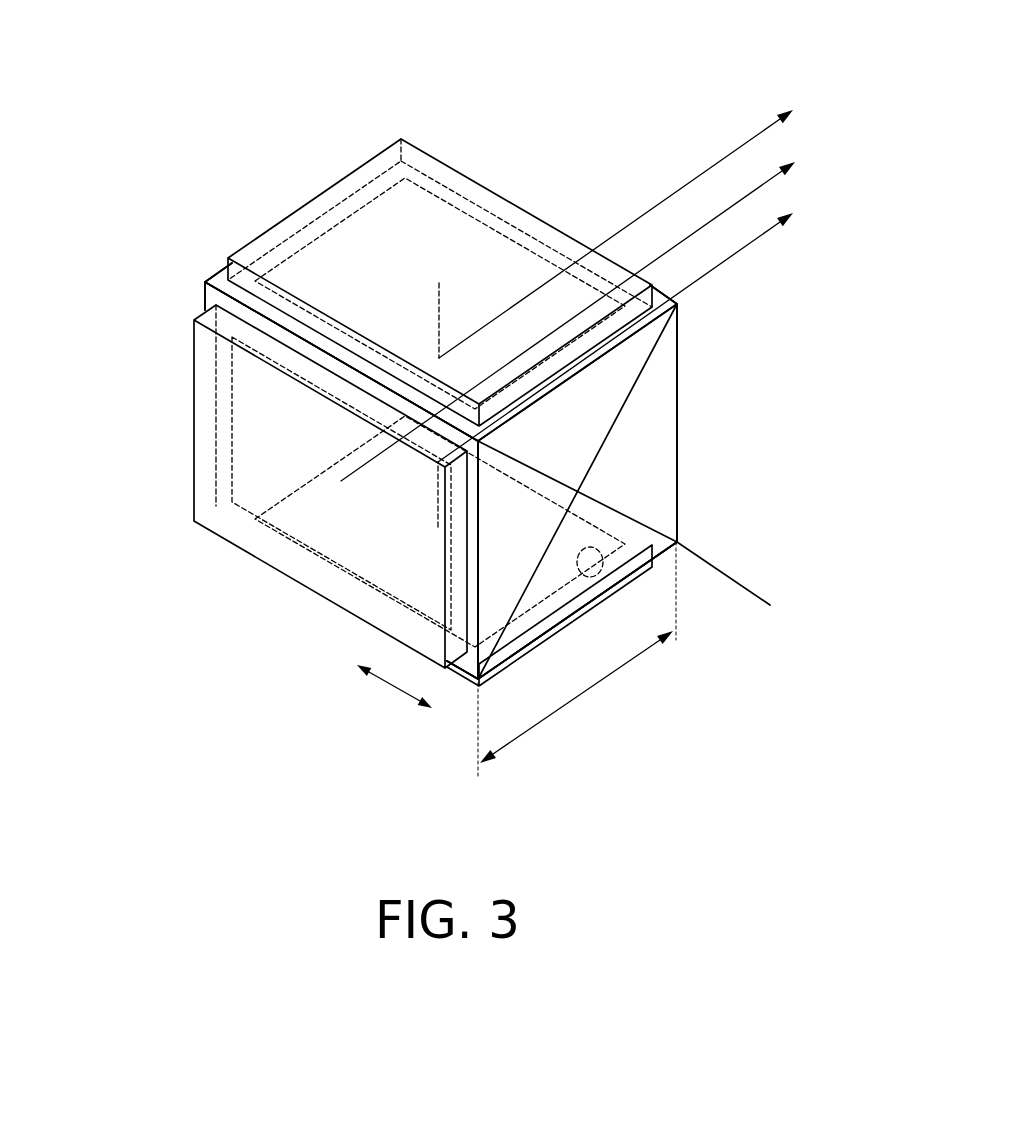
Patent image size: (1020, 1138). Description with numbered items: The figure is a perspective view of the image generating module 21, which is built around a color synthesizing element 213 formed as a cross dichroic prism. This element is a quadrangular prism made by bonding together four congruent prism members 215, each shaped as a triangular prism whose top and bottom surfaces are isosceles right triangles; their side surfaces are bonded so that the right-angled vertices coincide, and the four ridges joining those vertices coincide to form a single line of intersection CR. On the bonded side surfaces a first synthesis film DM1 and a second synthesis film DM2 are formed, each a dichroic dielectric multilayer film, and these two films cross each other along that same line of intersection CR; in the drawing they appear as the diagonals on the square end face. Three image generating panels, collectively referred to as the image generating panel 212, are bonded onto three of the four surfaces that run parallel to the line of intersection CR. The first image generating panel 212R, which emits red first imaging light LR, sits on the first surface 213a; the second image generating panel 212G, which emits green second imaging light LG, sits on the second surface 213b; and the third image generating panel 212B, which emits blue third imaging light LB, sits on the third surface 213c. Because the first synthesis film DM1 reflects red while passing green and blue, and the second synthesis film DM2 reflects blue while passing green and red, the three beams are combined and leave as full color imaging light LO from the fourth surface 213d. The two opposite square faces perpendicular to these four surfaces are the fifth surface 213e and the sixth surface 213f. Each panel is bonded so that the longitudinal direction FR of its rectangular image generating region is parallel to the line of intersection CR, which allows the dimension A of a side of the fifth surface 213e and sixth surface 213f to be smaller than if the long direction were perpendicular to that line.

The image generating module 21 is at (451, 117).
The image generating panel 212 is at (441, 460).
The third image generating panel 212B is at (440, 252).
The second image generating panel 212G is at (330, 504).
The first image generating panel 212R is at (471, 628).
The color synthesizing element 213 is at (450, 377).
The first surface 213a is at (648, 543).
The second surface 213b is at (212, 303).
The third surface 213c is at (223, 283).
The fourth surface 213d is at (510, 203).
The fifth surface 213e is at (657, 381).
The sixth surface 213f is at (203, 277).
The prism member 215 is at (676, 543).
The first synthesis film DM1 is at (662, 350).
The second synthesis film DM2 is at (615, 503).
The line of intersection CR is at (748, 581).
The first imaging light LR is at (692, 284).
The second imaging light LG is at (678, 242).
The third imaging light LB is at (705, 172).
The full color imaging light LO is at (728, 262).
The longitudinal direction FR is at (394, 694).
The dimension A is at (577, 660).